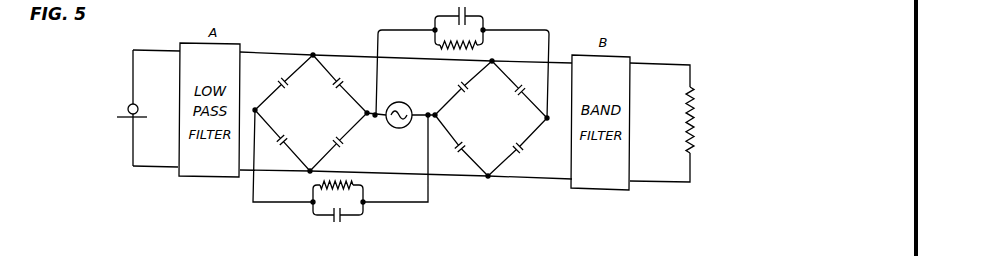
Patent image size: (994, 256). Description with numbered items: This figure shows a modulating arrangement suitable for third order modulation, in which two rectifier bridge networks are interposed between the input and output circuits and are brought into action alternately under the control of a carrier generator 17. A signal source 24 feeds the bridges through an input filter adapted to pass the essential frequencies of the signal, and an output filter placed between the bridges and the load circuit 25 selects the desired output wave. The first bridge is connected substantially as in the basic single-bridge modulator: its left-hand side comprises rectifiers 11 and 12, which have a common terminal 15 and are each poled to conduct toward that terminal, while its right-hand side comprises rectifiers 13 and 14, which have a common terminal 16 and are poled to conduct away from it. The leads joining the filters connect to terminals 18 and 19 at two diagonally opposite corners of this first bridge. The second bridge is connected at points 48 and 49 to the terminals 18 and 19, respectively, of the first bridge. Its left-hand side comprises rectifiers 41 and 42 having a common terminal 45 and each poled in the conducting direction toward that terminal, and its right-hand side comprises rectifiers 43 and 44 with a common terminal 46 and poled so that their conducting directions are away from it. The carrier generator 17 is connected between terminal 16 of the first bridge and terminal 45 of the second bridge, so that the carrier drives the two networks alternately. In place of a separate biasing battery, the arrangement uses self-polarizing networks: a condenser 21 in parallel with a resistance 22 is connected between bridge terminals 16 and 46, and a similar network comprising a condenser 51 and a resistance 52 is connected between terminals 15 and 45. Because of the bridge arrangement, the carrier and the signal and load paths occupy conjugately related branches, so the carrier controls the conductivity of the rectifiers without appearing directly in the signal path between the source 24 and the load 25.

The rectifier 11 is at (287, 80).
The rectifier 12 is at (291, 136).
The rectifier 13 is at (336, 93).
The rectifier 14 is at (344, 147).
The common terminal 15 is at (259, 111).
The common terminal 16 is at (362, 114).
The carrier generator 17 is at (403, 130).
The terminal 18 is at (315, 53).
The terminal 19 is at (310, 165).
The condenser 21 is at (455, 12).
The resistance 22 is at (440, 48).
The signal source 24 is at (137, 106).
The load circuit 25 is at (684, 125).
The rectifier 41 is at (457, 87).
The rectifier 42 is at (467, 144).
The rectifier 43 is at (515, 94).
The rectifier 44 is at (522, 154).
The common terminal 45 is at (440, 116).
The common terminal 46 is at (542, 119).
The point 48 is at (496, 60).
The point 49 is at (487, 181).
The condenser 51 is at (331, 222).
The resistance 52 is at (356, 186).